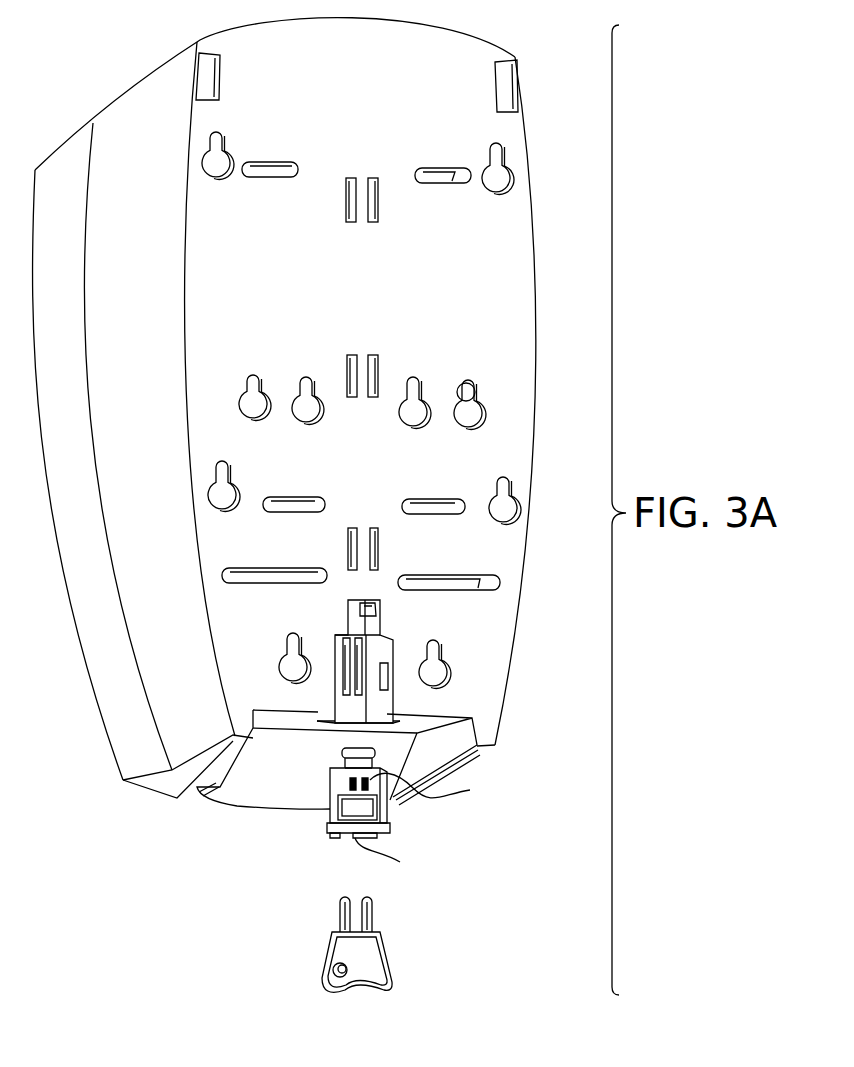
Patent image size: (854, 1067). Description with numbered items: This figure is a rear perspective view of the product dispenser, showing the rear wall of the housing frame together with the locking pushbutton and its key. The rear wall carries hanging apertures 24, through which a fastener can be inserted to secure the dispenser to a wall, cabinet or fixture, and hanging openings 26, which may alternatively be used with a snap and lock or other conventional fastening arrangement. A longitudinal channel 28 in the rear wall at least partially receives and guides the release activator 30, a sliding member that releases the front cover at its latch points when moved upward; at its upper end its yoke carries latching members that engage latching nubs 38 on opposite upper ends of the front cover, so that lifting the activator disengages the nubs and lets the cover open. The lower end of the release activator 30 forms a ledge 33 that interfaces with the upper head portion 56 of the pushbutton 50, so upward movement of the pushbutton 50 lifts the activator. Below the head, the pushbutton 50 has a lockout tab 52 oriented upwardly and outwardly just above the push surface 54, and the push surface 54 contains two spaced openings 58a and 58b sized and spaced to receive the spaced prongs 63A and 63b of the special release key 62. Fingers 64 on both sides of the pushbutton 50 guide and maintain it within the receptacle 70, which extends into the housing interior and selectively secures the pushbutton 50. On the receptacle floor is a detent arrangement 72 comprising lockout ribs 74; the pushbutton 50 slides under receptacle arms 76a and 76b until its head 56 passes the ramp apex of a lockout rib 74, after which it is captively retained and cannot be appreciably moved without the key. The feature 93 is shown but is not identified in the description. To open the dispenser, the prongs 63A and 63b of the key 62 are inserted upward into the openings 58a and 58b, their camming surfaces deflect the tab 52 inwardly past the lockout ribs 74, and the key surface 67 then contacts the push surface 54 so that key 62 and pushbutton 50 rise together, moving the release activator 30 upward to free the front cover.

The hanging apertures 24 is at (224, 148).
The hanging openings 26 is at (271, 178).
The longitudinal channel 28 is at (373, 177).
The release activator 30 is at (348, 177).
The ledge 33 is at (362, 606).
The latching nubs 38 is at (205, 50).
The pushbutton 50 is at (385, 802).
The lockout tab 52 is at (340, 808).
The push surface 54 is at (393, 862).
The upper head portion 56 is at (342, 750).
The spaced opening 58a is at (372, 836).
The spaced opening 58b is at (333, 838).
The release key 62 is at (332, 935).
The prong 63A is at (340, 918).
The prong 63b is at (374, 932).
The fingers 64 is at (436, 787).
The key surface 67 is at (354, 925).
The receptacle 70 is at (357, 628).
The detent arrangement 72 is at (360, 708).
The lockout ribs 74 is at (340, 690).
The receptacle arm 76a is at (335, 673).
The receptacle arm 76b is at (390, 672).
The polarizing key slot 93 is at (376, 660).